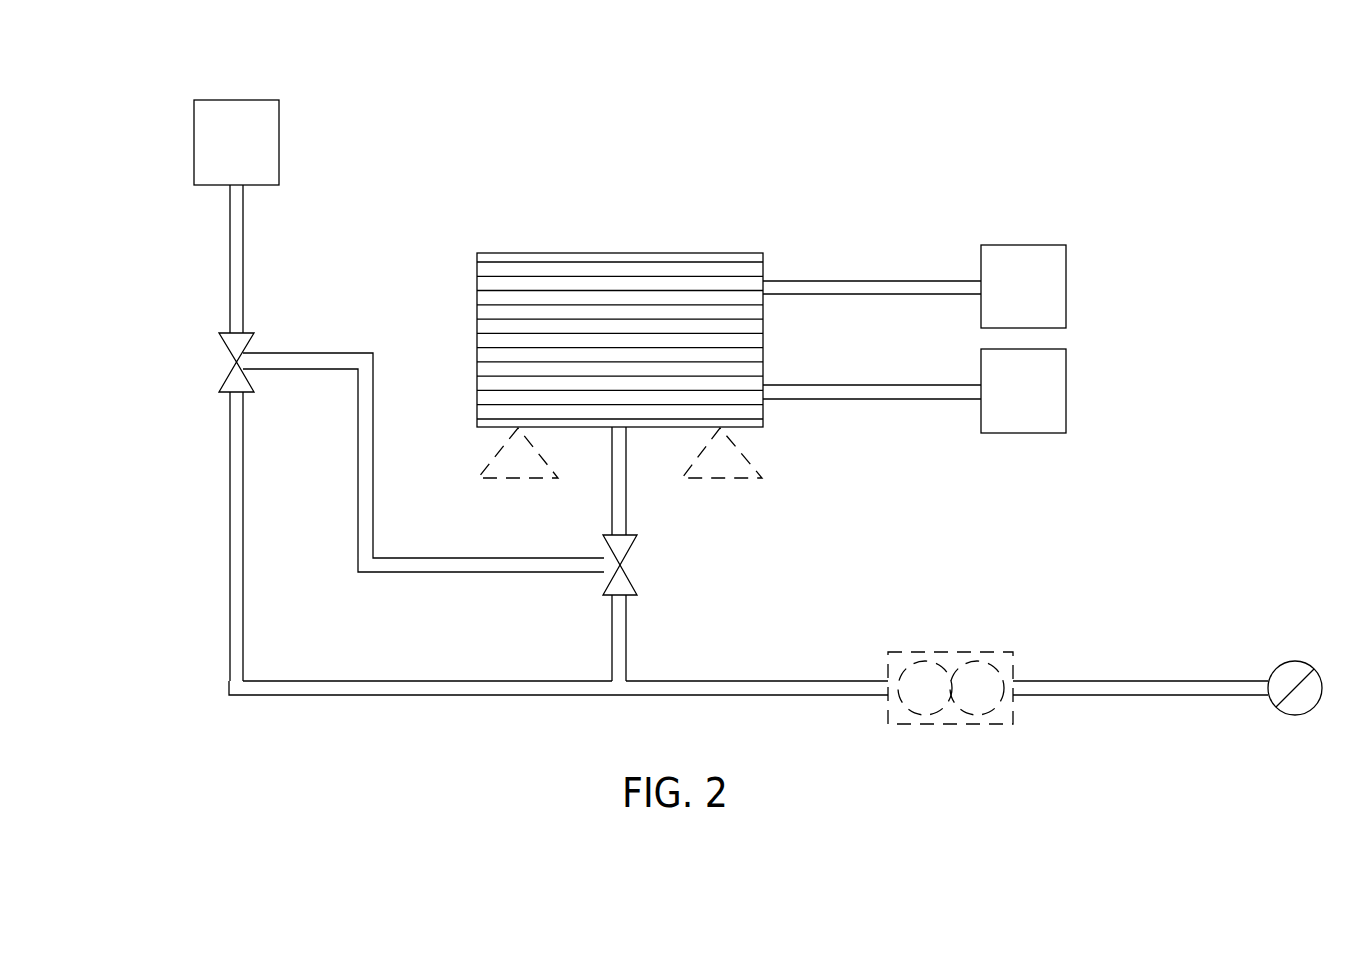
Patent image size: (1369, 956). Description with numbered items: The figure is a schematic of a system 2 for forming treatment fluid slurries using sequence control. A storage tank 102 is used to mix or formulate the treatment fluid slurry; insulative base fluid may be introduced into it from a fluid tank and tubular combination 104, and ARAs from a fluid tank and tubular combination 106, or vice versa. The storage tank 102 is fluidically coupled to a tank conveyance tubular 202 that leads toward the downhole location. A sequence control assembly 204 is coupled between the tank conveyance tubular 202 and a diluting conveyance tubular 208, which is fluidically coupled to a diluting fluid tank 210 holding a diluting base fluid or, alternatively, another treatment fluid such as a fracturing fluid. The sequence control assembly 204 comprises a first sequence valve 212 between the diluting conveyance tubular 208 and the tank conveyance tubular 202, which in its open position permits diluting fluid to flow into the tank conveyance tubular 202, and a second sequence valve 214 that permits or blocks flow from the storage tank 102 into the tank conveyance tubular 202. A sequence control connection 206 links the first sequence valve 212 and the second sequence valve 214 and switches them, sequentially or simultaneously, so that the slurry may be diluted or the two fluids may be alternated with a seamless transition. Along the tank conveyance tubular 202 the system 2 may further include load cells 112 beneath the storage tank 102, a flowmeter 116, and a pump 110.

The system 2 is at (786, 99).
The storage tank 102 is at (618, 253).
The fluid tank and tubular combination 104 is at (872, 281).
The fluid tank and tubular combination 106 is at (872, 385).
The pump 110 is at (1290, 661).
The load cell 112 is at (493, 462).
The flowmeter 116 is at (950, 652).
The tank conveyance tubular 202 is at (245, 634).
The sequence control assembly 204 is at (418, 300).
The sequence control connection 206 is at (304, 353).
The diluting conveyance tubular 208 is at (229, 232).
The diluting fluid tank 210 is at (258, 156).
The first sequence valve 212 is at (224, 347).
The second sequence valve 214 is at (629, 553).